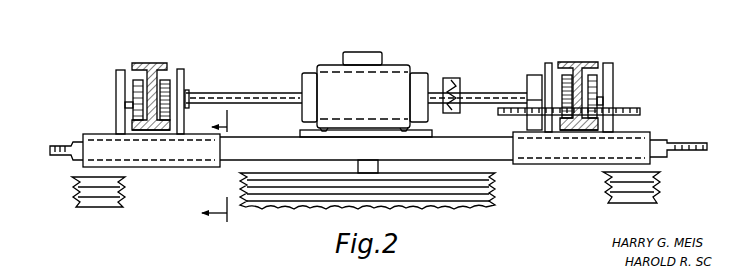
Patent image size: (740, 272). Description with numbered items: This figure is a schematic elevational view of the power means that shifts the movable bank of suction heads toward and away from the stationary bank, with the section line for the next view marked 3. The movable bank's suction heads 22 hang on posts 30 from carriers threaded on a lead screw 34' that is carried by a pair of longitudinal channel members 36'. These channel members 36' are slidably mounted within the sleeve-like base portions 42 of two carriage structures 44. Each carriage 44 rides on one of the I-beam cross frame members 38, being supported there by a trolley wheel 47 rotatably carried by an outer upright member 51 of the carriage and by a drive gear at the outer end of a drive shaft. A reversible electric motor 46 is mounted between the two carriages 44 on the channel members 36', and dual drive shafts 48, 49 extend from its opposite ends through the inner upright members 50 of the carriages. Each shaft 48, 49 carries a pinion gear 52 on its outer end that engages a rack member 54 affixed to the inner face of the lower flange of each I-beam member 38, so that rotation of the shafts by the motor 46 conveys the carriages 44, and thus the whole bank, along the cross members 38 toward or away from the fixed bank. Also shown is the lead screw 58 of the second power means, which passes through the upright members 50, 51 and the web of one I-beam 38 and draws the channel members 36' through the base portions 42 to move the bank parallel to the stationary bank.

The suction head 22 is at (455, 205).
The post 30 is at (378, 170).
The lead screw 34' is at (46, 141).
The longitudinal channel member 36' is at (377, 163).
The I-beam cross frame member 38 is at (151, 63).
The sleeve-like base portion 42 is at (96, 134).
The carriage structure 44 is at (82, 82).
The reversible electric motor 46 is at (390, 65).
The trolley wheel 47 is at (135, 88).
The drive shaft 48 is at (497, 93).
The drive shaft 49 is at (276, 93).
The inner upright member 50 is at (184, 68).
The outer upright member 51 is at (117, 72).
The pinion gear 52 is at (167, 80).
The rack member 54 is at (173, 125).
The lead screw 58 is at (642, 114).
The section line 3- 3 is at (220, 170).